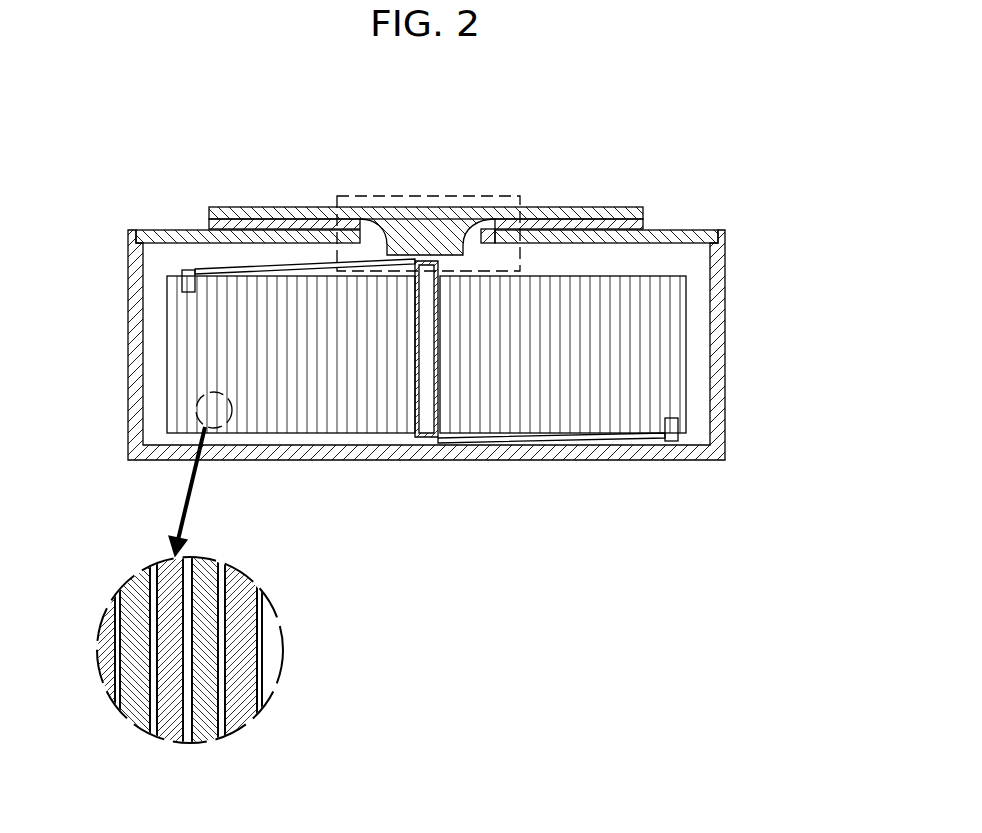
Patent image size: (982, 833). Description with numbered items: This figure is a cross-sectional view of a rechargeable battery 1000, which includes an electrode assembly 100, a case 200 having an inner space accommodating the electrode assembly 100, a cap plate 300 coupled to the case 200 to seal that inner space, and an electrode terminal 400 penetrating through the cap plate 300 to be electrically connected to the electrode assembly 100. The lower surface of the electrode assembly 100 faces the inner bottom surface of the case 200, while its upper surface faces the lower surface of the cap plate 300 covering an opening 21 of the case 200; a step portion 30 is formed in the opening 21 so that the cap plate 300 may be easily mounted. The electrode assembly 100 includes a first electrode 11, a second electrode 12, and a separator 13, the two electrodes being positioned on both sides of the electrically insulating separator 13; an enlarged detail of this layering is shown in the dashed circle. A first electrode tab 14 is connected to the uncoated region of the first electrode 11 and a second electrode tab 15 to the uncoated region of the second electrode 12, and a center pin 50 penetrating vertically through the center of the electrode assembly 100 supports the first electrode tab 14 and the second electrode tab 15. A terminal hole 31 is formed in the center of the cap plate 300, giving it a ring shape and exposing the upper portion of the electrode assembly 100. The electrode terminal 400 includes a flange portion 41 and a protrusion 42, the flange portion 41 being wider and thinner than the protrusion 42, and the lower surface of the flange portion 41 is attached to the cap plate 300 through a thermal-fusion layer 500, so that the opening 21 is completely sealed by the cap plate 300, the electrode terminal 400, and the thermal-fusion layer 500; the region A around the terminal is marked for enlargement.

The rechargeable battery 1000 is at (463, 108).
The case 200 is at (265, 452).
The step portion 30 is at (427, 197).
The cap plate 300 is at (225, 238).
The opening 21 is at (670, 238).
The thermal-fusion layer 500 is at (267, 224).
The electrode terminal 400 is at (392, 157).
The flange portion 41 is at (322, 209).
The protrusion 42 is at (393, 232).
The terminal hole 31 is at (487, 233).
The region A is at (448, 196).
The second electrode tab 15 is at (197, 269).
The first electrode tab 14 is at (573, 440).
The center pin 50 is at (425, 439).
The electrode assembly 100 is at (345, 426).
The first electrode 11 is at (138, 710).
The second electrode 12 is at (173, 710).
The separator 13 is at (116, 698).